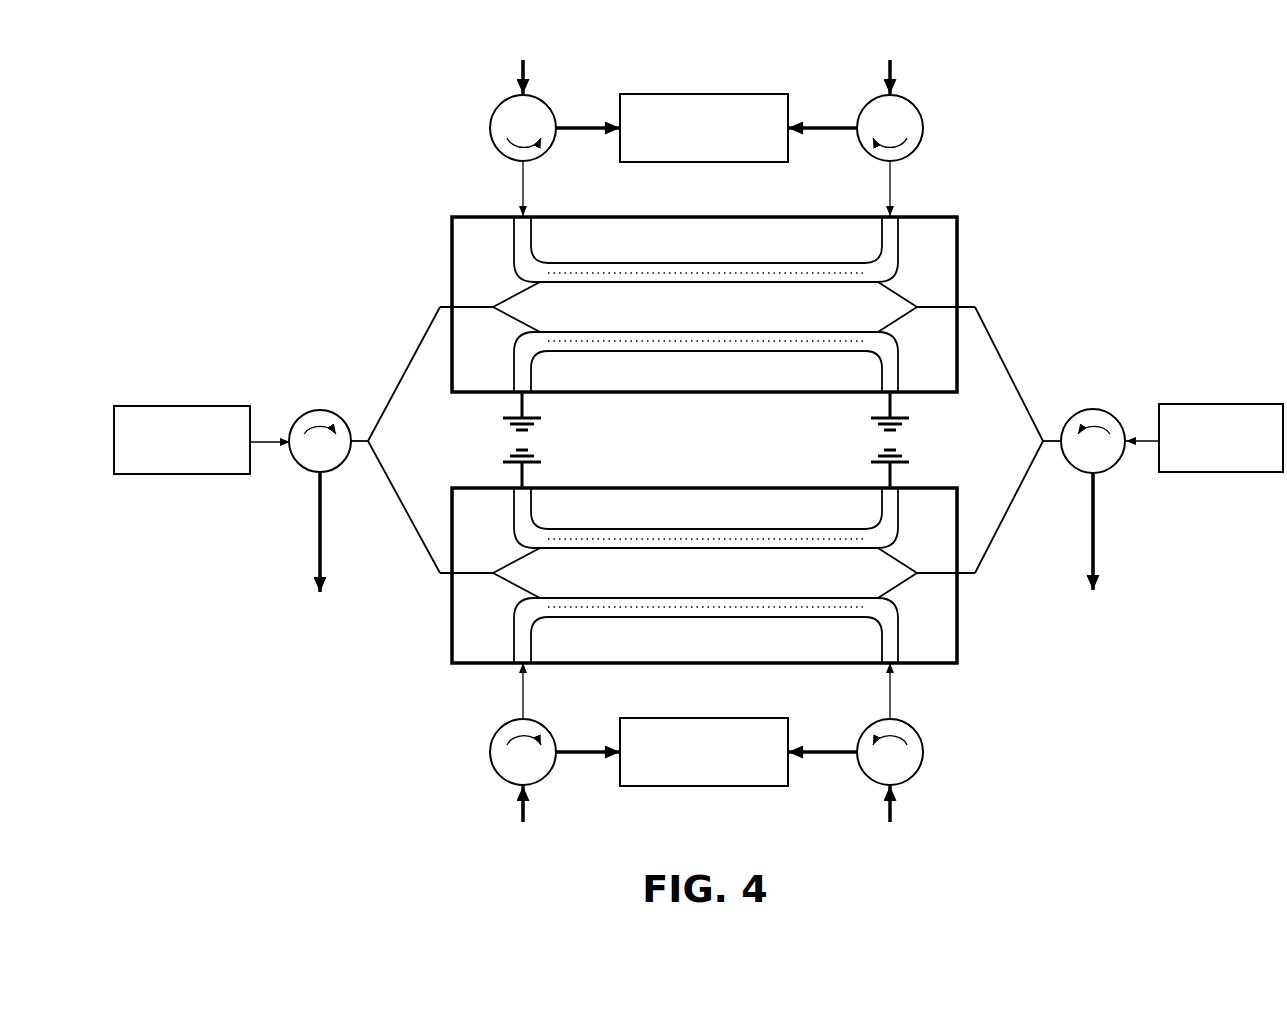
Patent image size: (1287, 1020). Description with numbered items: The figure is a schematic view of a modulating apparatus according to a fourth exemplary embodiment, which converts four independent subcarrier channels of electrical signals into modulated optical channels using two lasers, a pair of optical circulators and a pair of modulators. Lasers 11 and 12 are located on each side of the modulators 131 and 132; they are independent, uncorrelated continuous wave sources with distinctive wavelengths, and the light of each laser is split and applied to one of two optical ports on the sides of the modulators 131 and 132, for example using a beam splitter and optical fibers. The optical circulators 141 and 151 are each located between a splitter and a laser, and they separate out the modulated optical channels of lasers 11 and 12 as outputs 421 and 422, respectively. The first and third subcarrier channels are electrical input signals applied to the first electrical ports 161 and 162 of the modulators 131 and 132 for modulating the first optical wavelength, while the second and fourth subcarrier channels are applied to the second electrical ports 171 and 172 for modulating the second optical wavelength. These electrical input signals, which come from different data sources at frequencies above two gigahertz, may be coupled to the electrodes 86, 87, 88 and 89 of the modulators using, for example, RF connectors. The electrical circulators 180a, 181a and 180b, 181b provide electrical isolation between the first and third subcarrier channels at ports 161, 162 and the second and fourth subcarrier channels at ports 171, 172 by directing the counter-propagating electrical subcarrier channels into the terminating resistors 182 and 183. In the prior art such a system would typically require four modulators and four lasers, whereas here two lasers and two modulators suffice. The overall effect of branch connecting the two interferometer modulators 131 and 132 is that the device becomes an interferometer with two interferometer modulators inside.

The laser 11 is at (202, 425).
The laser 12 is at (1204, 424).
The optical circulator 141 is at (320, 424).
The optical circulator 151 is at (1093, 425).
The output 421 is at (320, 553).
The output 422 is at (1093, 549).
The modulator 132 is at (704, 323).
The modulator 131 is at (704, 556).
The electrode 86 is at (524, 180).
The electrode 87 is at (889, 180).
The electrode 88 is at (524, 699).
The electrode 89 is at (889, 699).
The electrical circulator 180a is at (490, 128).
The electrical circulator 180b is at (923, 128).
The electrical circulator 181a is at (490, 752).
The electrical circulator 181b is at (923, 752).
The first electrical port 162 is at (523, 65).
The second electrical port 172 is at (890, 65).
The first electrical port 161 is at (523, 816).
The second electrical port 171 is at (890, 816).
The terminating resistor 183 is at (706, 110).
The terminating resistor 182 is at (706, 769).